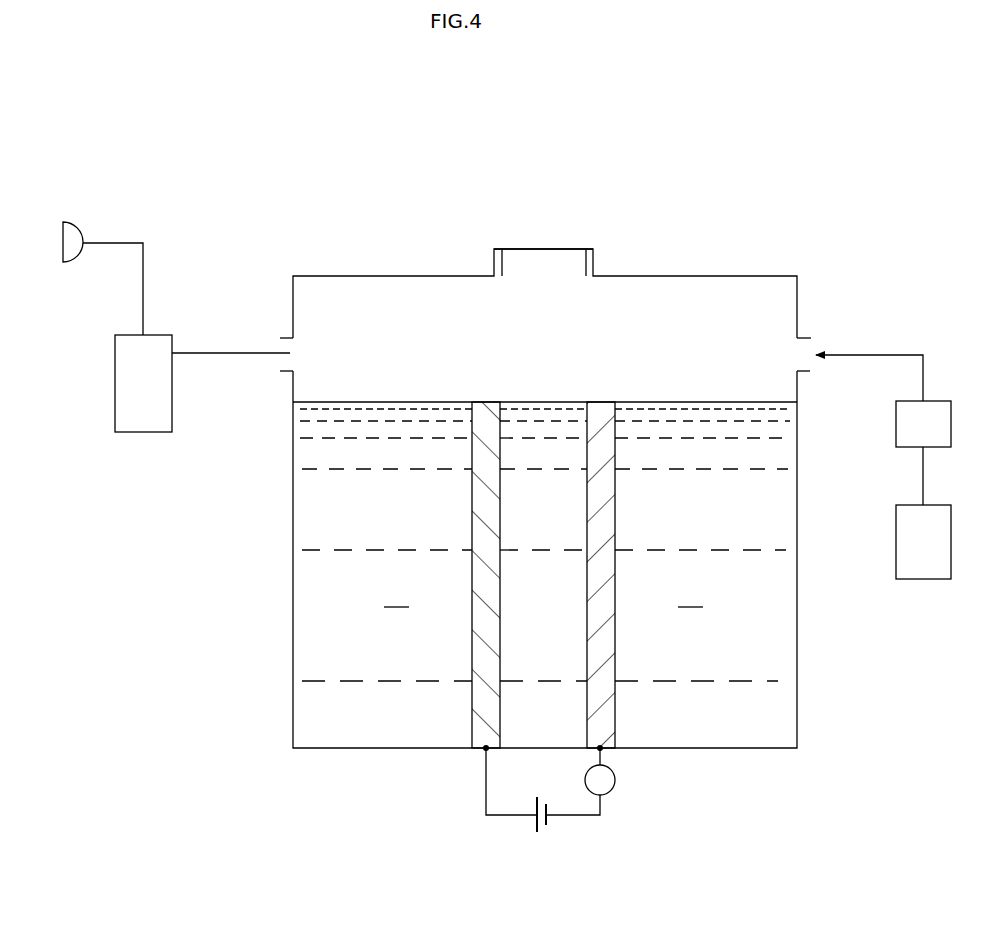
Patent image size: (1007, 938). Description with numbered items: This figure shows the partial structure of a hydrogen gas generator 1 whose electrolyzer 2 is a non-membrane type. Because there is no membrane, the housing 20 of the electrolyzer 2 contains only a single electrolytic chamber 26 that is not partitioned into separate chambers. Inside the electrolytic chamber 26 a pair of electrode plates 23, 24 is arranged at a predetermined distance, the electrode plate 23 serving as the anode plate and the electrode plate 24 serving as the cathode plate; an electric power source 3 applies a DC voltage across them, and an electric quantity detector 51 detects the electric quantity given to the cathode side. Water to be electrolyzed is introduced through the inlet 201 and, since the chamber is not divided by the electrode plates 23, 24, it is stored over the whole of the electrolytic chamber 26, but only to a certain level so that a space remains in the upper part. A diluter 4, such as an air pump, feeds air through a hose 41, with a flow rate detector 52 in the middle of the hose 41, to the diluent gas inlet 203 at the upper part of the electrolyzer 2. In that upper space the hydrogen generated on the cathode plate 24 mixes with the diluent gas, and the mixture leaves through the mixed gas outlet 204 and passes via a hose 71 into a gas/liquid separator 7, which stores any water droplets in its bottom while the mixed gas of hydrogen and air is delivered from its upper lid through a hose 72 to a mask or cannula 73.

The hydrogen gas generator 1 is at (838, 142).
The electrolyzer 2 is at (297, 772).
The electric power source 3 is at (542, 830).
The diluter 4 is at (951, 542).
The gas/liquid separator 7 is at (158, 408).
The housing 20 is at (760, 749).
The electrode plate 23 is at (476, 713).
The electrode plate 24 is at (605, 713).
The electrolytic chamber 26 is at (713, 663).
The hose 41 is at (897, 355).
The electric quantity detector 51 is at (605, 783).
The flow rate detector 52 is at (951, 422).
The hose 71 is at (240, 355).
The hose 72 is at (145, 283).
The mask or cannula 73 is at (73, 221).
The inlet for the water to be electrolyzed 201 is at (578, 268).
The diluent gas inlet 203 is at (807, 375).
The mixed gas outlet 204 is at (287, 339).